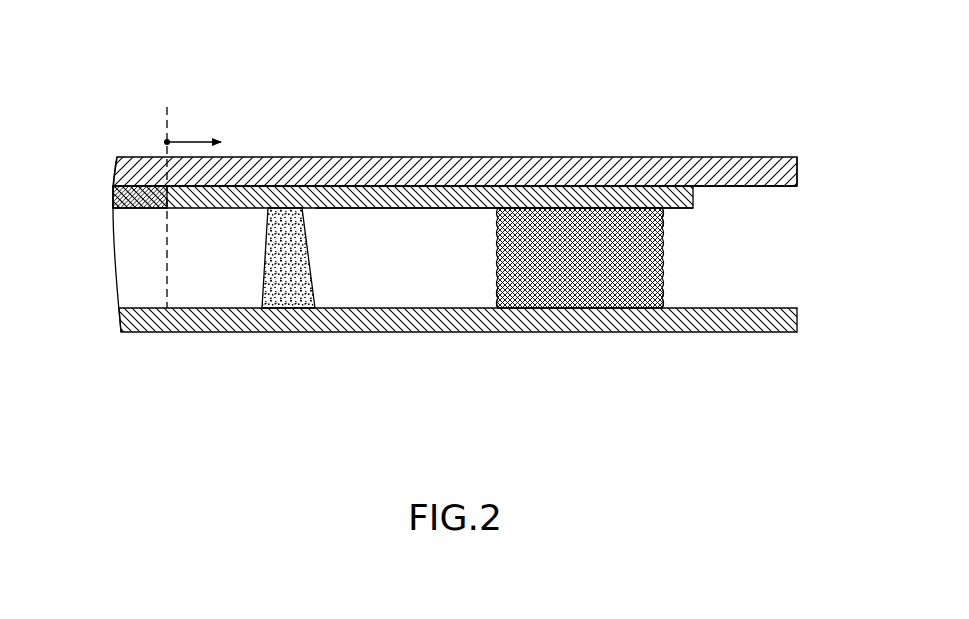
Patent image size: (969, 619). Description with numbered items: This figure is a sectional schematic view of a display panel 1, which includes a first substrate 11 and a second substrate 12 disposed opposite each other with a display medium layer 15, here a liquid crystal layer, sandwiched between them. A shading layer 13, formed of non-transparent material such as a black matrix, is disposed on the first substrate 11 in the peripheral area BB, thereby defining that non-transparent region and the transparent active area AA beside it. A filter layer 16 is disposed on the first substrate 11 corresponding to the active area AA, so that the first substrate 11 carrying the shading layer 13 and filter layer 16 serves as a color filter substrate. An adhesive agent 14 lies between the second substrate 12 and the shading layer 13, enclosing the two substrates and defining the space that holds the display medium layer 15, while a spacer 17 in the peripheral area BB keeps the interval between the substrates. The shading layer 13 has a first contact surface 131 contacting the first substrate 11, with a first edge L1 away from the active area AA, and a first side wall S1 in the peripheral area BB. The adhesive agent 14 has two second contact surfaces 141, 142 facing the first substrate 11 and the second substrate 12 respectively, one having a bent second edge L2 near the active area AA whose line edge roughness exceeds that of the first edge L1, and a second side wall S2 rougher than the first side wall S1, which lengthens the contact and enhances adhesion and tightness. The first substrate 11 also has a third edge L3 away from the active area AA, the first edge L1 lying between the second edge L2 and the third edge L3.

The display panel 1 is at (196, 54).
The first substrate 11 is at (745, 172).
The second substrate 12 is at (750, 320).
The shading layer 13 is at (650, 206).
The first contact surface 131 is at (603, 186).
The adhesive agent 14 is at (664, 262).
The second contact surface 141 is at (663, 225).
The second contact surface 142 is at (663, 293).
The display medium layer 15 is at (127, 263).
The filter layer 16 is at (113, 200).
The spacer 17 is at (307, 253).
The first edge L1 is at (695, 190).
The second edge L2 is at (497, 210).
The third edge L3 is at (799, 177).
The first side wall S1 is at (696, 206).
The second side wall S2 is at (497, 284).
The active area AA is at (167, 142).
The peripheral area BB is at (194, 126).